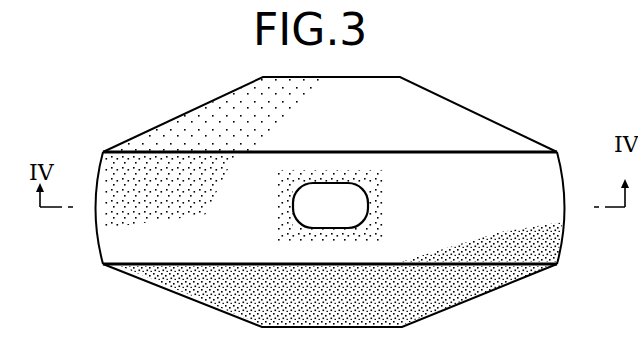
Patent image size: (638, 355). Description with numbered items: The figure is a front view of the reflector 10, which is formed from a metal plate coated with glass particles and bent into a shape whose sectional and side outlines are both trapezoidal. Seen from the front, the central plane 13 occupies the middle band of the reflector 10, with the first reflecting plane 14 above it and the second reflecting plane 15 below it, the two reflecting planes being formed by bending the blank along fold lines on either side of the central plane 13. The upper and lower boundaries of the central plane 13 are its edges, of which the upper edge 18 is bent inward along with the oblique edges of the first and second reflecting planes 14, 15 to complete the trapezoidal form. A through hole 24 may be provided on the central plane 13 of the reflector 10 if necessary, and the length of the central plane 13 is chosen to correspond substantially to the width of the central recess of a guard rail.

The reflector 10 is at (499, 114).
The central plane 13 is at (437, 221).
The first reflecting plane 14 is at (343, 131).
The second reflecting plane 15 is at (348, 307).
The upper edge of the central plane 18 is at (565, 169).
The through hole 24 is at (346, 219).